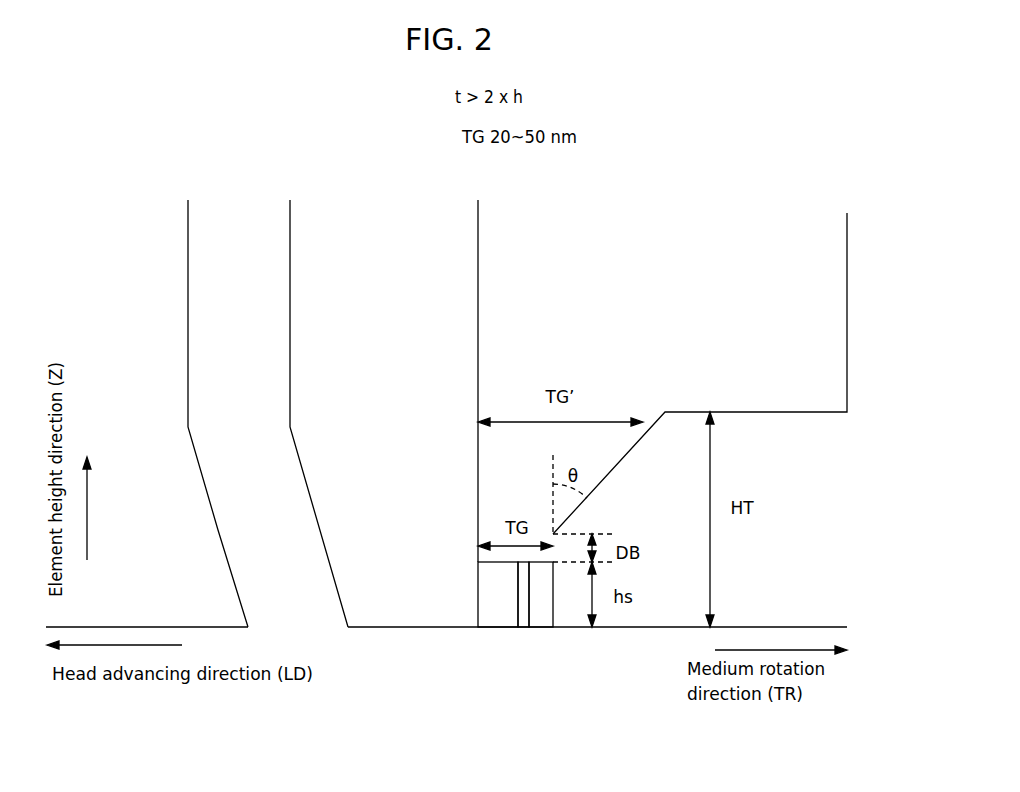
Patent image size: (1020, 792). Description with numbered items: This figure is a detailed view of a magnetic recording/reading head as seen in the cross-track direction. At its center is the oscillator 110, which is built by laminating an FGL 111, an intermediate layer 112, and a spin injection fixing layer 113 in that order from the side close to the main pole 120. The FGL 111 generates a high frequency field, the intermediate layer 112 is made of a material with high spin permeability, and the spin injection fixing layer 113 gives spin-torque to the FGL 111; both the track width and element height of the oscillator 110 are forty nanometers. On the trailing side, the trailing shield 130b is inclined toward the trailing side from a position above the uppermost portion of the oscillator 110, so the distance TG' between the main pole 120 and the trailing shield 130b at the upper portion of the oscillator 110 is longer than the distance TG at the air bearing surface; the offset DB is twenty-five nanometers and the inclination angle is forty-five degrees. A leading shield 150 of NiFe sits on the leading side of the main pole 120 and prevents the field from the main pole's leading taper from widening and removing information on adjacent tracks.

The oscillator 110 is at (524, 646).
The FGL 111 is at (498, 622).
The intermediate layer 112 is at (525, 622).
The spin injection fixing layer 113 is at (563, 621).
The main pole 120 is at (338, 413).
The trailing shield 130b is at (662, 410).
The leading shield 150 is at (218, 413).